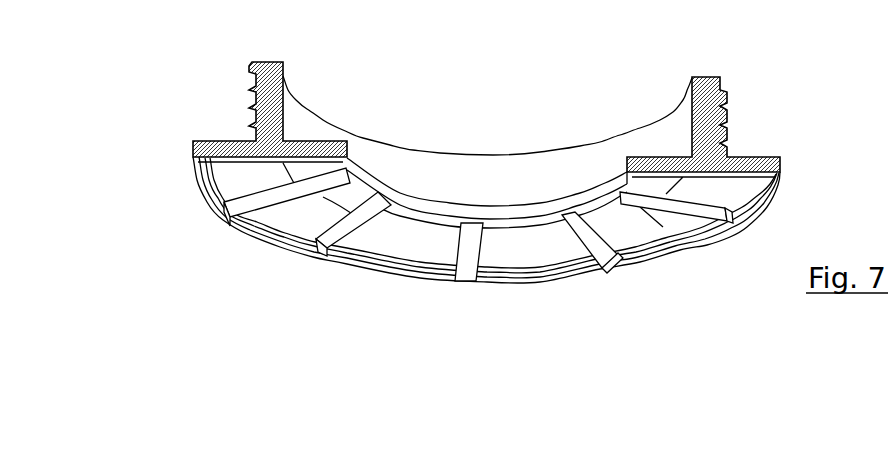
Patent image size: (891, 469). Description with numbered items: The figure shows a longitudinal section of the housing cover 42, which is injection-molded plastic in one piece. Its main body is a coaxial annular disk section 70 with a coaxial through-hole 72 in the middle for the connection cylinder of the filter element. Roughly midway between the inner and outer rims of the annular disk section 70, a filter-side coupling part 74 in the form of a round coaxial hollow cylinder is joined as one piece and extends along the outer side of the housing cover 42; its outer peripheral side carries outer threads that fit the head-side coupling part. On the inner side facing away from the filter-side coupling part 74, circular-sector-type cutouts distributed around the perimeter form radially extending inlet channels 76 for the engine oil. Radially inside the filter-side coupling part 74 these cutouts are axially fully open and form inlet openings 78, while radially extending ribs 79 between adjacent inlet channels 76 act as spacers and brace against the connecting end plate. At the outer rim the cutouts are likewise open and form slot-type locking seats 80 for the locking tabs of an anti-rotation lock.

The housing cover 42 is at (487, 186).
The annular disk section 70 is at (643, 220).
The through-hole 72 is at (480, 203).
The filter-side coupling part 74 is at (415, 160).
The inlet channels 76 is at (410, 240).
The inlet openings 78 is at (603, 208).
The ribs 79 is at (262, 198).
The locking seats 80 is at (740, 192).